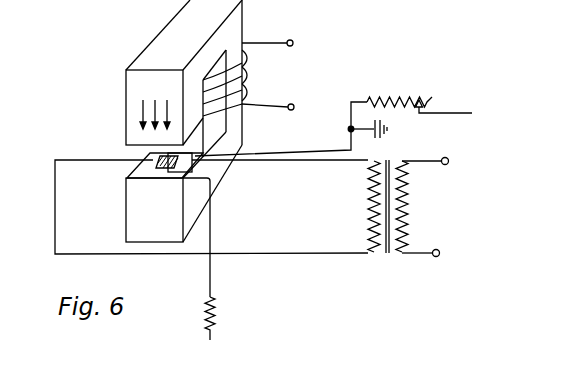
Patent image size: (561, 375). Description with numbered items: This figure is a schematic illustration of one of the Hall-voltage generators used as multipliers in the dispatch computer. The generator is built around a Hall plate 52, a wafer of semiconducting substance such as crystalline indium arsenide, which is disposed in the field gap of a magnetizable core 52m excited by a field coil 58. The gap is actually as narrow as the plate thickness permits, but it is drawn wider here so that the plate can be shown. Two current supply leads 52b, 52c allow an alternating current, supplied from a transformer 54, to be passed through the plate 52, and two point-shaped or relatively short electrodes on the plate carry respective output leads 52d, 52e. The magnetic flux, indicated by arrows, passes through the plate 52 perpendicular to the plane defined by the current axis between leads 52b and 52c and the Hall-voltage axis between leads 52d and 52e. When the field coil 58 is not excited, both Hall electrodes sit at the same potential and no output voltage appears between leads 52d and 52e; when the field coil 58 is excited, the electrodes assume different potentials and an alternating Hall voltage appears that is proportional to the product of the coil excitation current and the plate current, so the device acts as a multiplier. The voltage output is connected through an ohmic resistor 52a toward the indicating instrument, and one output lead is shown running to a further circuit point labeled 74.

The Hall plate 52 is at (150, 161).
The ohmic resistor 52a is at (217, 309).
The current supply lead 52b is at (92, 160).
The current supply lead 52c is at (295, 160).
The output lead 52d is at (212, 233).
The output lead 52e is at (277, 150).
The magnetizable core 52m is at (162, 39).
The transformer 54 is at (385, 250).
The field coil 58 is at (250, 72).
The signal processing circuit (off-sheet) 74 is at (435, 69).